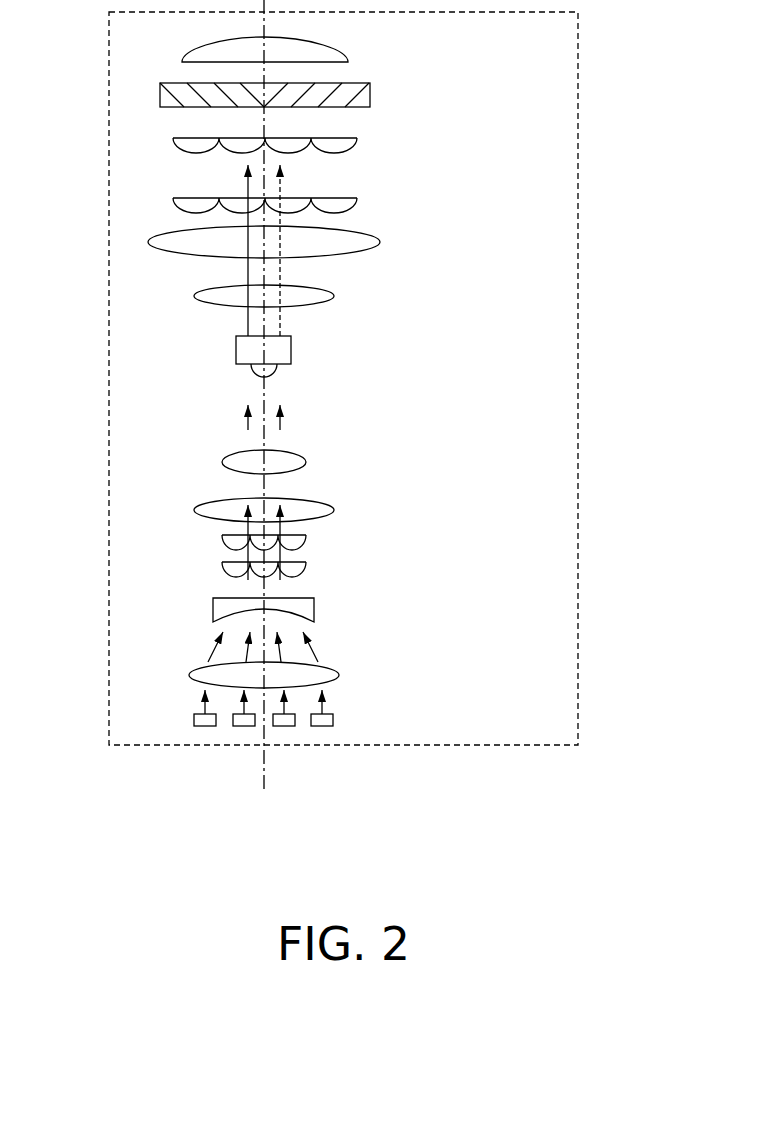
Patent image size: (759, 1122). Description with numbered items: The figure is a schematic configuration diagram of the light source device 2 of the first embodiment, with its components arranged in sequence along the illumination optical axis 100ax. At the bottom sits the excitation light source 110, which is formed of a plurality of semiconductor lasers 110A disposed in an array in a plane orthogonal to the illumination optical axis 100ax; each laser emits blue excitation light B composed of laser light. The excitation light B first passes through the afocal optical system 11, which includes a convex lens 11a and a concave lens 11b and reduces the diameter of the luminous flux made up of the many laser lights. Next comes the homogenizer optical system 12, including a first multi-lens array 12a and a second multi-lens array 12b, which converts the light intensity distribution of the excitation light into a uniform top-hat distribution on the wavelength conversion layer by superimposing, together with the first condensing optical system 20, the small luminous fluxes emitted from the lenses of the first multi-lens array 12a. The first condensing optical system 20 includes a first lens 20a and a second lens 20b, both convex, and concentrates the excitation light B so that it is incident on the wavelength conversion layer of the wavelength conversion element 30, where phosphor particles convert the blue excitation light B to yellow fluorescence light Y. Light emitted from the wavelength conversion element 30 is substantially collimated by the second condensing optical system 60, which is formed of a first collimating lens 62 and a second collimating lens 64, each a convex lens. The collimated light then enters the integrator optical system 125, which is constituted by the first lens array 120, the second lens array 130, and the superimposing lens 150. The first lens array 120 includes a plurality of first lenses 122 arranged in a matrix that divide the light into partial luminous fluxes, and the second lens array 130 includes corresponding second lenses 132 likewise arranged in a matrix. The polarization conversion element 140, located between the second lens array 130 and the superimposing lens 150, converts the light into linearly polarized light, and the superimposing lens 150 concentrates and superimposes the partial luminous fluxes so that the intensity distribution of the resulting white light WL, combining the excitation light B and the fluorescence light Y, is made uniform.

The light source device 2 is at (578, 443).
The integrator optical system 125 is at (482, 142).
The superimposing lens 150 is at (348, 60).
The polarization conversion element 140 is at (370, 98).
The second lens array 130 is at (251, 144).
The second lenses 132 is at (183, 150).
The first lens array 120 is at (251, 220).
The first lenses 122 is at (183, 210).
The white light WL is at (301, 430).
The yellow fluorescence light Y is at (281, 178).
The excitation light B is at (250, 180).
The second condensing optical system 60 is at (192, 277).
The second collimating lens 64 is at (160, 248).
The first collimating lens 62 is at (198, 300).
The wavelength conversion element 30 is at (280, 353).
The first condensing optical system 20 is at (362, 472).
The second lens 20b is at (305, 455).
The first lens 20a is at (333, 505).
The homogenizer optical system 12 is at (360, 545).
The second multi-lens array 12b is at (306, 548).
The first multi-lens array 12a is at (306, 577).
The afocal optical system 11 is at (343, 638).
The concave lens 11b is at (314, 610).
The convex lens 11a is at (337, 670).
The excitation light source 110 is at (239, 710).
The semiconductor lasers 110A is at (193, 720).
The illumination optical axis 100ax is at (262, 778).